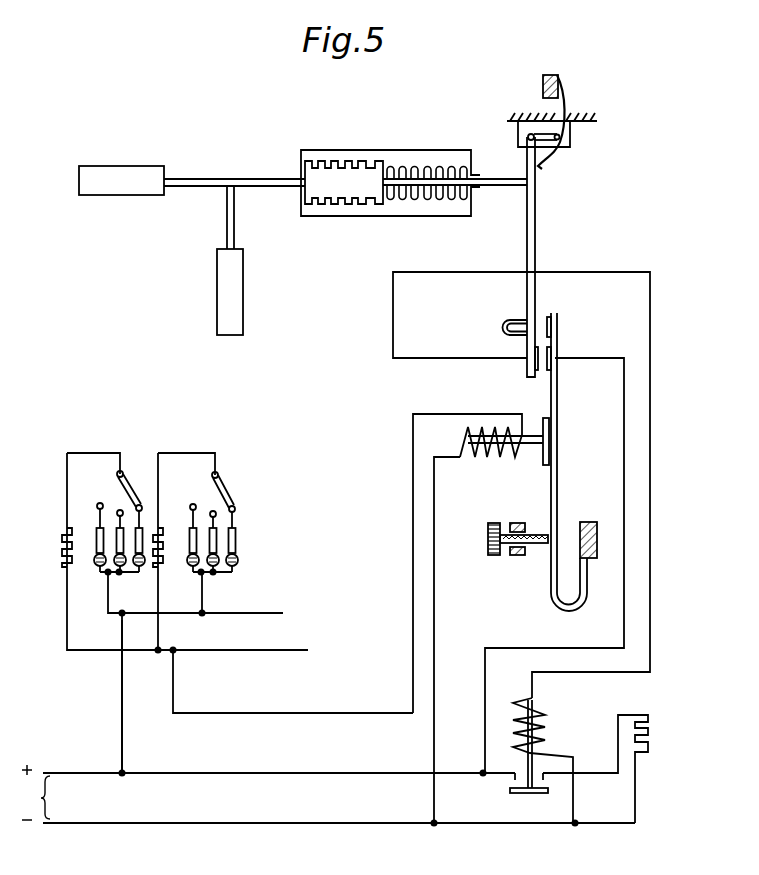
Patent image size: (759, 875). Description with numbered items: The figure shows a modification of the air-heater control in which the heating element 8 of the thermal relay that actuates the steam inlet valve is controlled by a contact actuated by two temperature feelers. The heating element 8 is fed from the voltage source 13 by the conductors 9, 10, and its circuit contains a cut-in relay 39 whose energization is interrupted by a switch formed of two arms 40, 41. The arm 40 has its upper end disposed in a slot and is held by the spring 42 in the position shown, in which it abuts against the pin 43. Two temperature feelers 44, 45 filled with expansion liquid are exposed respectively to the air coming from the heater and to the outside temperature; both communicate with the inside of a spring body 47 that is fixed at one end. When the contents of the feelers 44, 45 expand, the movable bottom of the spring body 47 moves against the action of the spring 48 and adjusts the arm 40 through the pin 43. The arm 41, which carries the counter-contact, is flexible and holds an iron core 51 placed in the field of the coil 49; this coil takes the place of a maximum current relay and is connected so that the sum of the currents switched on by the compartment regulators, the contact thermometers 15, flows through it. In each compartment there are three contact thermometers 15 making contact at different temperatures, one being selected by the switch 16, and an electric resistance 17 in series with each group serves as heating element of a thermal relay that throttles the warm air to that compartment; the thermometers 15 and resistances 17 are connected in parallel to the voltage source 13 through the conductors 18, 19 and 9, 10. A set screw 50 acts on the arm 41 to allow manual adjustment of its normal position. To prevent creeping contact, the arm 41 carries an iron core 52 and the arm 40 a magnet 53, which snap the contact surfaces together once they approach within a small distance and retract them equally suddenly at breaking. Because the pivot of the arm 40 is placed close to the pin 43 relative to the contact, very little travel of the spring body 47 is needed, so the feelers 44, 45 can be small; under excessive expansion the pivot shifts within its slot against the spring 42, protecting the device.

The electric heating element 8 is at (642, 717).
The conductor 9 is at (92, 757).
The conductor 10 is at (328, 839).
The voltage source 13 is at (32, 797).
The contact thermometers 15 is at (200, 556).
The switch 16 is at (222, 488).
The electric resistance 17 is at (62, 550).
The conductor 18 is at (120, 692).
The conductor 19 is at (177, 683).
The cut-in relay 39 is at (515, 792).
The arm 40 is at (535, 249).
The arm 41 is at (558, 147).
The spring 42 is at (555, 111).
The pin 43 is at (492, 183).
The temperature feeler 44 is at (137, 176).
The temperature feeler 45 is at (233, 301).
The spring body 47 is at (350, 160).
The spring 48 is at (432, 200).
The coil 49 is at (487, 453).
The set screw 50 is at (488, 543).
The iron core 51 is at (528, 444).
The iron core 52 is at (557, 327).
The magnet 53 is at (505, 330).